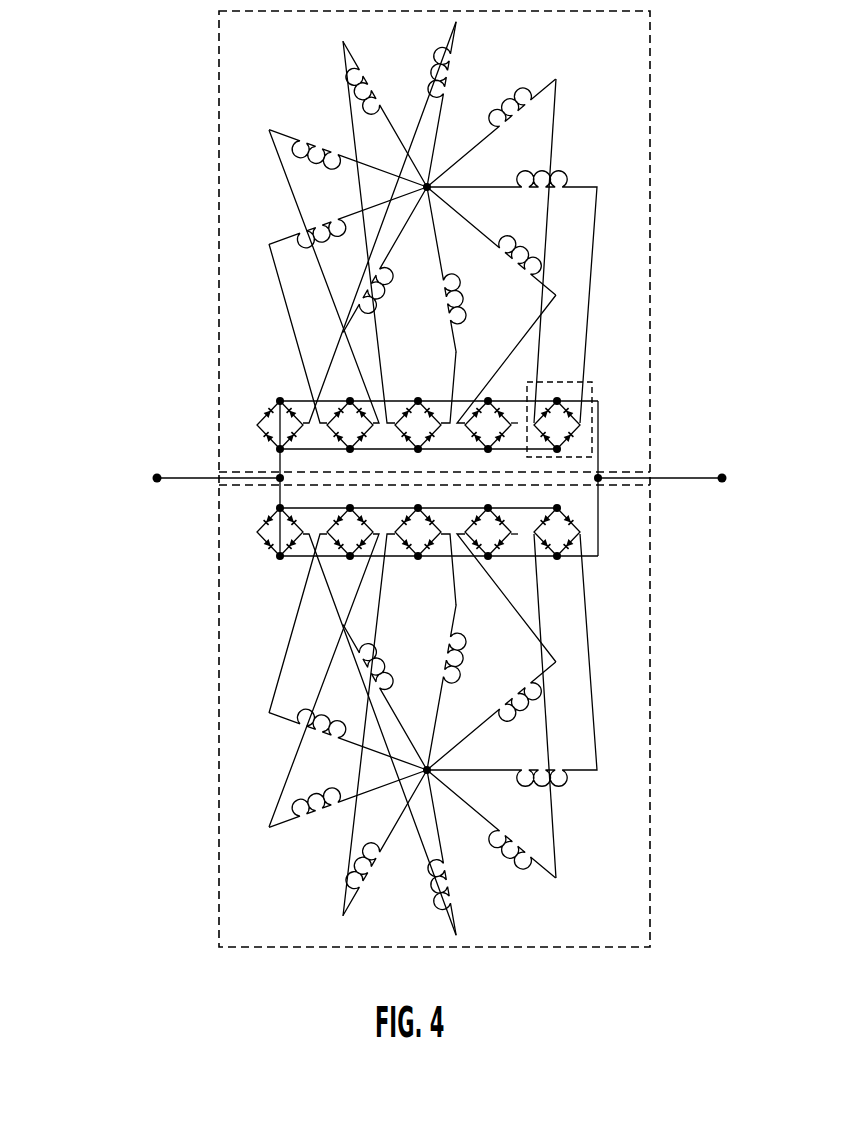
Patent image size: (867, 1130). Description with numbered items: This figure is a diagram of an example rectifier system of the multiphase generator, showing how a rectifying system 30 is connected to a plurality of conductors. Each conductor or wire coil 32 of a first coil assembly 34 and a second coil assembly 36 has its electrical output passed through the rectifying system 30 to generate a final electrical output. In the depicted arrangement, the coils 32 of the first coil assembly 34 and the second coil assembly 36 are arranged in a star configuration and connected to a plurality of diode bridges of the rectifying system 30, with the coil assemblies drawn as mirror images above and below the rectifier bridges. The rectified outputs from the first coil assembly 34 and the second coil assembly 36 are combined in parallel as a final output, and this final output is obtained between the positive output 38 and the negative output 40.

The rectifying system 30 is at (253, 418).
The conductor (wire coil) 32 is at (545, 252).
The first coil assembly 34 is at (217, 207).
The second coil assembly 36 is at (218, 752).
The positive output 38 is at (716, 490).
The negative output 40 is at (150, 472).